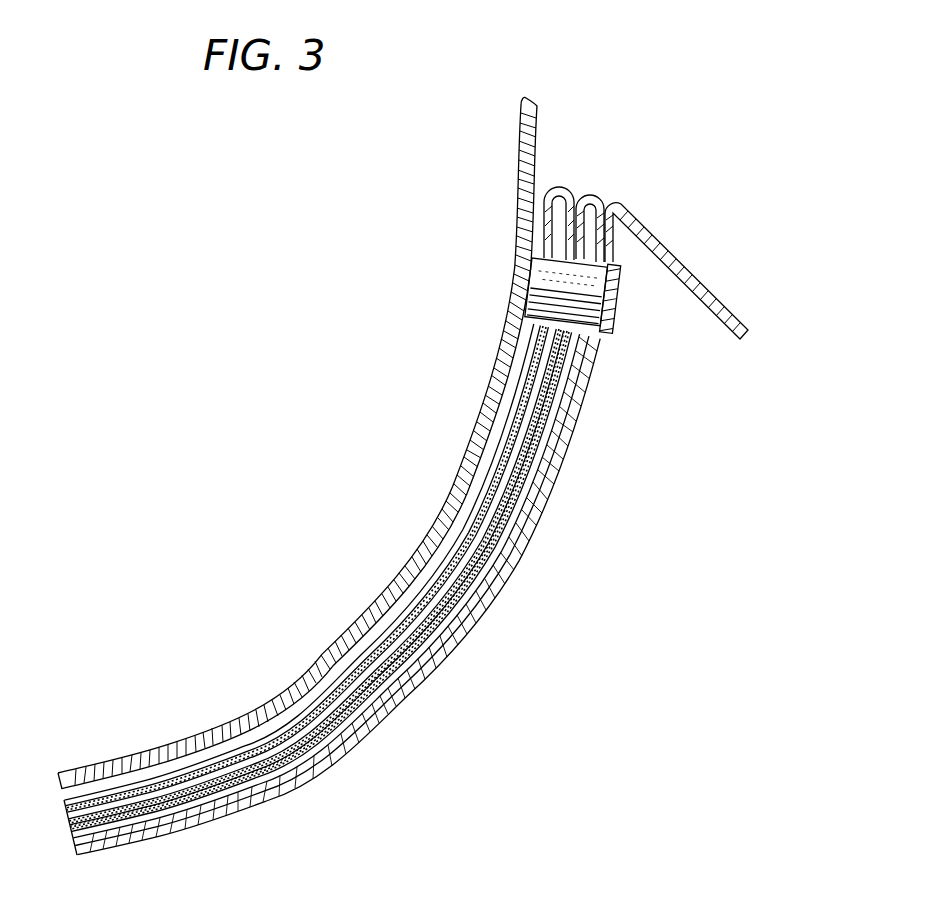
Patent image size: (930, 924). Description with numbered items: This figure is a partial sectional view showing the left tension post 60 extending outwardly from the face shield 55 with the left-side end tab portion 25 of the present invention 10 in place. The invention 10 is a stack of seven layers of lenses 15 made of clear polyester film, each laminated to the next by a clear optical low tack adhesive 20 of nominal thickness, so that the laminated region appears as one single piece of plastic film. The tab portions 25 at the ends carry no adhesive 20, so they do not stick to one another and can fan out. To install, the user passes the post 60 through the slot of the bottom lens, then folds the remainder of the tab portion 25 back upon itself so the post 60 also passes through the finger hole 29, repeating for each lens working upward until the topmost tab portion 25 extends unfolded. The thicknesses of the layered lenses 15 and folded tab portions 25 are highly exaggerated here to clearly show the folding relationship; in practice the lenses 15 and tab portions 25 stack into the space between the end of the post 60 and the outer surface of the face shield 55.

The present invention 10 is at (543, 503).
The lenses 15 is at (477, 553).
The adhesive 20 is at (400, 703).
The tab portion 25 is at (735, 313).
The finger hole 29 is at (657, 247).
The face shield 55 is at (518, 188).
The tension post 60 is at (610, 310).